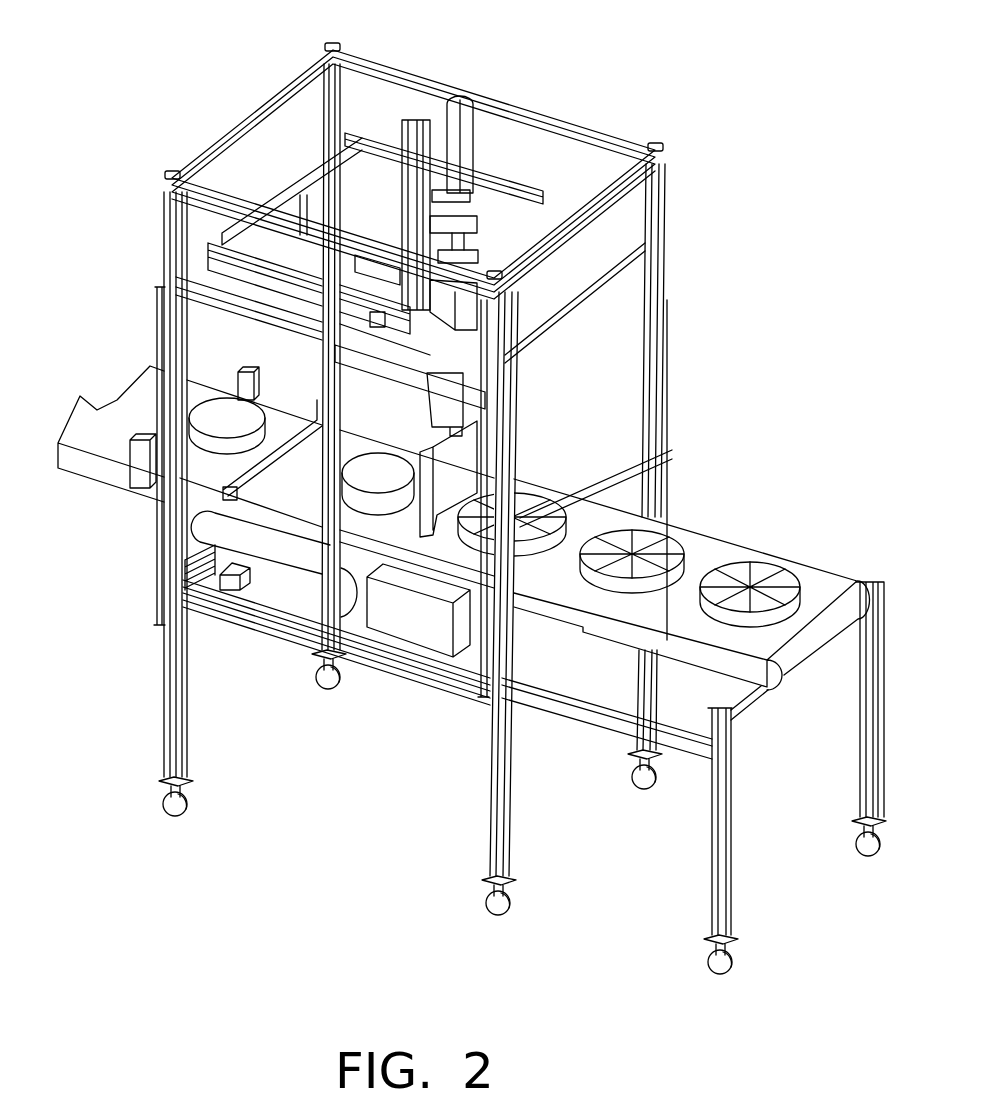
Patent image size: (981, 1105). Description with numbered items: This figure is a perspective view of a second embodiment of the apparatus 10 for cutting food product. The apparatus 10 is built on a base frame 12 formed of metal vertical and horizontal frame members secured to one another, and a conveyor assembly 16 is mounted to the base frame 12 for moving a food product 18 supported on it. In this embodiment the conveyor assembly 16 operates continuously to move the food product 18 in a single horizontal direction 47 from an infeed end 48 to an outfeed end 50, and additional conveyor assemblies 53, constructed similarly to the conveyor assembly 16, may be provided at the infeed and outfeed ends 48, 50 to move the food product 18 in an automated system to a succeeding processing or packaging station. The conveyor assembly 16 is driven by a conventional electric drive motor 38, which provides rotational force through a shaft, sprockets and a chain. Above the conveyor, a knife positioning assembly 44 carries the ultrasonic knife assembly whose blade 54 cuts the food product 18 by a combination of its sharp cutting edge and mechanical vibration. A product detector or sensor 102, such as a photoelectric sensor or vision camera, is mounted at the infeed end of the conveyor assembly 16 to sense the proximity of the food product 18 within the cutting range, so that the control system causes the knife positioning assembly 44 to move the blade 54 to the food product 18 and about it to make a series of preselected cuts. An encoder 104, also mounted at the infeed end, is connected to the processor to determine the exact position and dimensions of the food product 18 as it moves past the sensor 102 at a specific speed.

The apparatus 10 is at (567, 87).
The base frame 12 is at (615, 143).
The conveyor assembly 16 is at (567, 625).
The food product 18 is at (217, 400).
The electric drive motor 38 is at (421, 625).
The knife positioning assembly 44 is at (380, 110).
The single horizontal direction 47 is at (150, 415).
The infeed end 48 is at (157, 553).
The outfeed end 50 is at (718, 466).
The additional conveyor assemblies 53 is at (112, 522).
The blade 54 is at (437, 445).
The product detector or sensor 102 is at (140, 462).
The encoder 104 is at (236, 374).